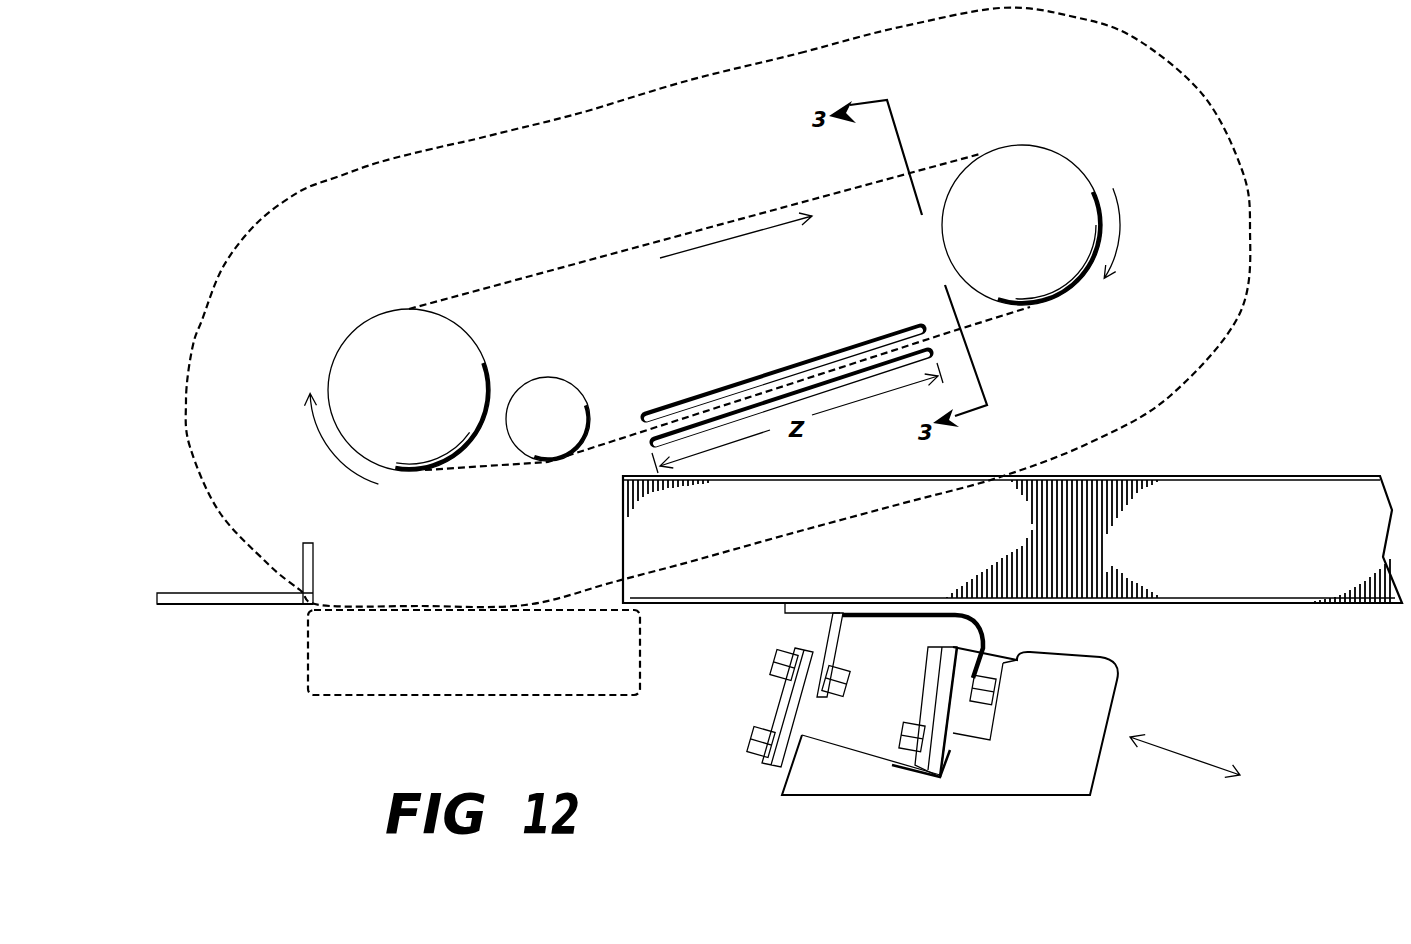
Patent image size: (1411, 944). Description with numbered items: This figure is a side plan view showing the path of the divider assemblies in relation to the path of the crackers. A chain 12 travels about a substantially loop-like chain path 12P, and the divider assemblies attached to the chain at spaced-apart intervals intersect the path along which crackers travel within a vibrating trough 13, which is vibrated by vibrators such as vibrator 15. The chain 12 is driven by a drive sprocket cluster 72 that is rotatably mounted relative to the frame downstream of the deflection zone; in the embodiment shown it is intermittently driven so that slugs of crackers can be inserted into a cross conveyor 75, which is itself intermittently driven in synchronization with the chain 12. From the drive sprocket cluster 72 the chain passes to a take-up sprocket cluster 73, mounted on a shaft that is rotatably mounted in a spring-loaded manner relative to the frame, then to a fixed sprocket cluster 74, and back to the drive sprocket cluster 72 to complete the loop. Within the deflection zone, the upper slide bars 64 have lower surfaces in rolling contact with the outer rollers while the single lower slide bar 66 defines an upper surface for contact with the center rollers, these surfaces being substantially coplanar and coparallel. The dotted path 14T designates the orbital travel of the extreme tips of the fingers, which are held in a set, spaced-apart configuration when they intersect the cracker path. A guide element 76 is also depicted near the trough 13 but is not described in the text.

The dotted path of finger tips 14T is at (482, 133).
The chain 12 is at (877, 183).
The chain path 12P is at (478, 470).
The drive sprocket cluster 72 is at (363, 333).
The take-up sprocket cluster 73 is at (1043, 157).
The fixed sprocket cluster 74 is at (552, 380).
The upper slide bar 64 is at (878, 337).
The lower slide bar 66 is at (653, 442).
The vibrating trough 13 is at (1265, 585).
The vibrator 15 is at (1103, 672).
The cross conveyor 75 is at (515, 700).
The guide 76 is at (157, 597).